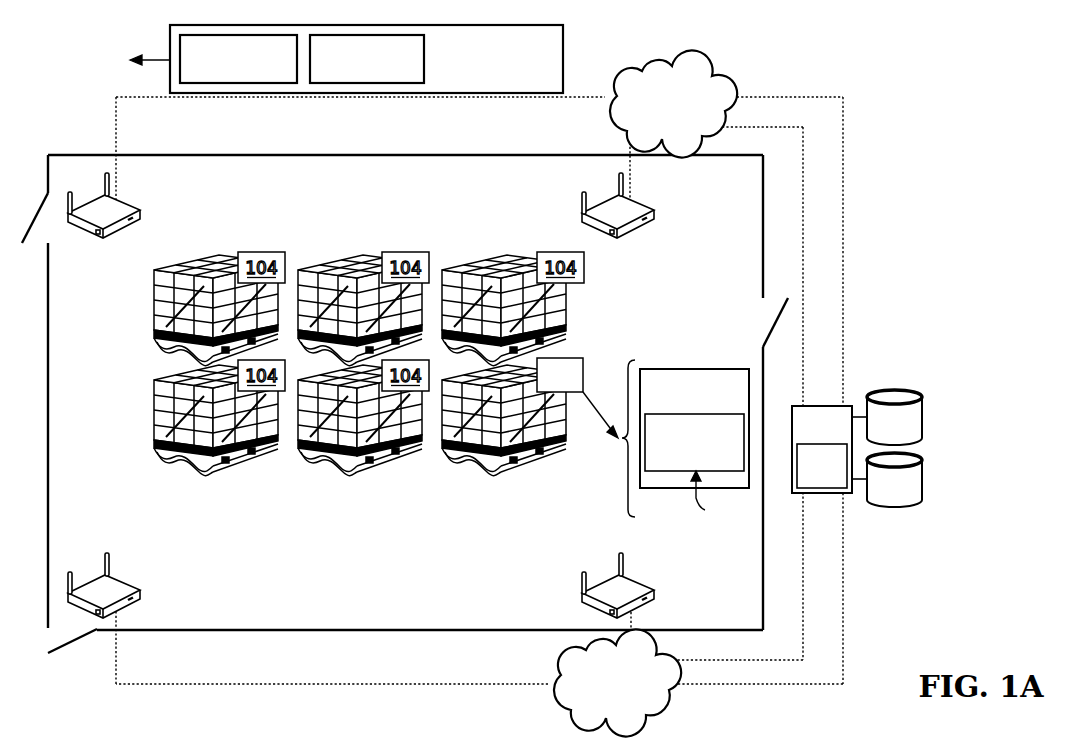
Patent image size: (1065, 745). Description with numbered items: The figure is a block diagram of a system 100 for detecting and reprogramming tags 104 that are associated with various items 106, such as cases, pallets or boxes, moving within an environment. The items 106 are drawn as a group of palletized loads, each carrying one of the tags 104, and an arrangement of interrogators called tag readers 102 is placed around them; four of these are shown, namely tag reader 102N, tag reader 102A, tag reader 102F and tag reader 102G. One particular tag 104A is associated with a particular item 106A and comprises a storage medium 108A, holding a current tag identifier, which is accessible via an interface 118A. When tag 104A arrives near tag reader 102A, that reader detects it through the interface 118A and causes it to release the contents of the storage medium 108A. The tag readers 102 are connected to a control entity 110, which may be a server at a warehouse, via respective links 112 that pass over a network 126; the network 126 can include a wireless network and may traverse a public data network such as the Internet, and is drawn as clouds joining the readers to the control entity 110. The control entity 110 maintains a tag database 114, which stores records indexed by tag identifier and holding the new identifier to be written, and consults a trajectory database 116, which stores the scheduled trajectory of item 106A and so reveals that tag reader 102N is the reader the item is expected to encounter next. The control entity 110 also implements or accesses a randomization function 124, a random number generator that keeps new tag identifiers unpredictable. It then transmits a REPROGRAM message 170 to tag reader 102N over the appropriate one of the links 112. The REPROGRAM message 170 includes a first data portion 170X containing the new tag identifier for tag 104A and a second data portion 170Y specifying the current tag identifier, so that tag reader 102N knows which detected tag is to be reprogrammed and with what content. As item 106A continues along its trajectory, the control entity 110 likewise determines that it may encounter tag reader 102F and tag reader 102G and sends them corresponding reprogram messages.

The system 100 is at (481, 381).
The tag readers 102 is at (361, 392).
The tag reader 102N is at (122, 208).
The tag reader 102A is at (607, 210).
The tag reader 102F is at (117, 585).
The tag reader 102G is at (607, 587).
The tags 104 is at (461, 345).
The tag 104A is at (576, 360).
The items 106 is at (360, 362).
The item 106A is at (465, 470).
The storage medium 108A is at (704, 504).
The control entity 110 is at (829, 449).
The links 112 is at (843, 190).
The tag database 114 is at (878, 434).
The trajectory database 116 is at (878, 497).
The interface 118A is at (672, 401).
The randomization function 124 is at (806, 476).
The network 126 is at (651, 111).
The REPROGRAM message 170 is at (346, 59).
The first data portion 170X is at (215, 70).
The second data portion 170Y is at (344, 70).